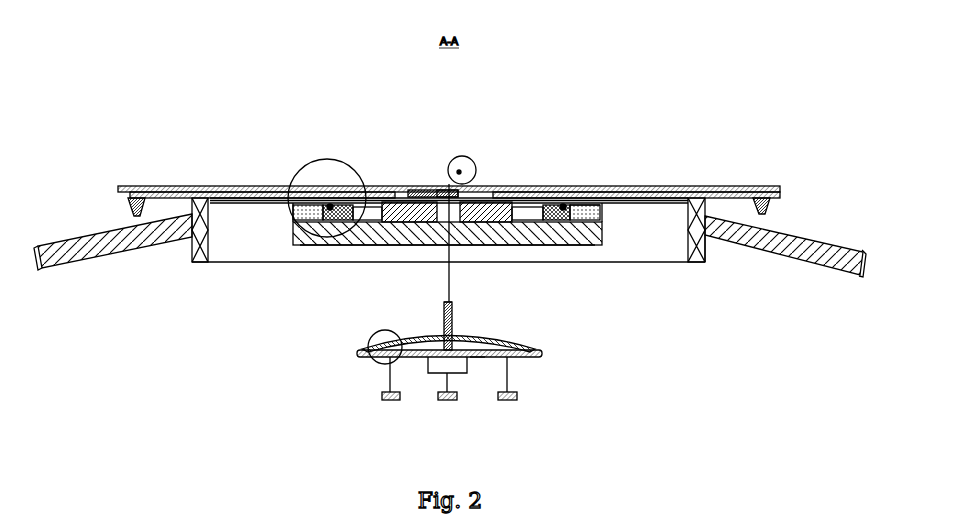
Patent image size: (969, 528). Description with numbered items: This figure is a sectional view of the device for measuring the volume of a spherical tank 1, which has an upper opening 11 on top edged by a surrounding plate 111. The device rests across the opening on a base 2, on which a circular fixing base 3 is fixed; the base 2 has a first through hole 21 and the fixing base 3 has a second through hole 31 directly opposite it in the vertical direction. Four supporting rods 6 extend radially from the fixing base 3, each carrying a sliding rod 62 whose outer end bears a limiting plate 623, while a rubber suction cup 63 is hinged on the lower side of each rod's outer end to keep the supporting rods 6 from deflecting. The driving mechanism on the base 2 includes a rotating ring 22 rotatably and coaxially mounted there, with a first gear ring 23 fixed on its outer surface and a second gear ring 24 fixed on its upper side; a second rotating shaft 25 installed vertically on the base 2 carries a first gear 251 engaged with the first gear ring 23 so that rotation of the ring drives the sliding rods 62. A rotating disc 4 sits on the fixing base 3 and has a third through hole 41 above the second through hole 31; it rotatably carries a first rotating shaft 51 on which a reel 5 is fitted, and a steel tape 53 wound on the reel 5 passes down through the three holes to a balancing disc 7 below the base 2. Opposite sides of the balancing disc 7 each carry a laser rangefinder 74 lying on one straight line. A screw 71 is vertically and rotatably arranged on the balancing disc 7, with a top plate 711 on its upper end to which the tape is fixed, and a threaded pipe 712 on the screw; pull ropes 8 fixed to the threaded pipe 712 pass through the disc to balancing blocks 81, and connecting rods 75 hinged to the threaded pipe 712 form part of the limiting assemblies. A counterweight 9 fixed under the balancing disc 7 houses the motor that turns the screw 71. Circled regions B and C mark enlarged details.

The spherical tank 1 is at (800, 237).
The upper opening 11 is at (670, 250).
The surrounding plate 111 is at (706, 249).
The base 2 is at (545, 248).
The first through hole 21 is at (468, 243).
The rotating ring 22 is at (560, 226).
The first gear ring 23 is at (572, 205).
The second gear ring 24 is at (562, 204).
The second rotating shaft 25 is at (605, 222).
The first gear 251 is at (607, 207).
The fixing base 3 is at (500, 198).
The second through hole 31 is at (417, 247).
The rotating disc 4 is at (418, 189).
The third through hole 41 is at (445, 190).
The reel 5 is at (462, 156).
The first rotating shaft 51 is at (461, 172).
The steel tape 53 is at (451, 287).
The supporting rod 6 is at (176, 186).
The sliding rod 62 is at (690, 196).
The limiting plate 623 is at (206, 198).
The suction cup 63 is at (128, 211).
The balancing disc 7 is at (541, 351).
The screw 71 is at (453, 313).
The top plate 711 is at (444, 303).
The threaded pipe 712 is at (425, 334).
The laser rangefinder 74 is at (527, 363).
The connecting rod 75 is at (477, 360).
The pull rope 8 is at (389, 383).
The balancing block 81 is at (388, 403).
The counterweight 9 is at (433, 403).
The detail B is at (300, 161).
The detail C is at (378, 362).